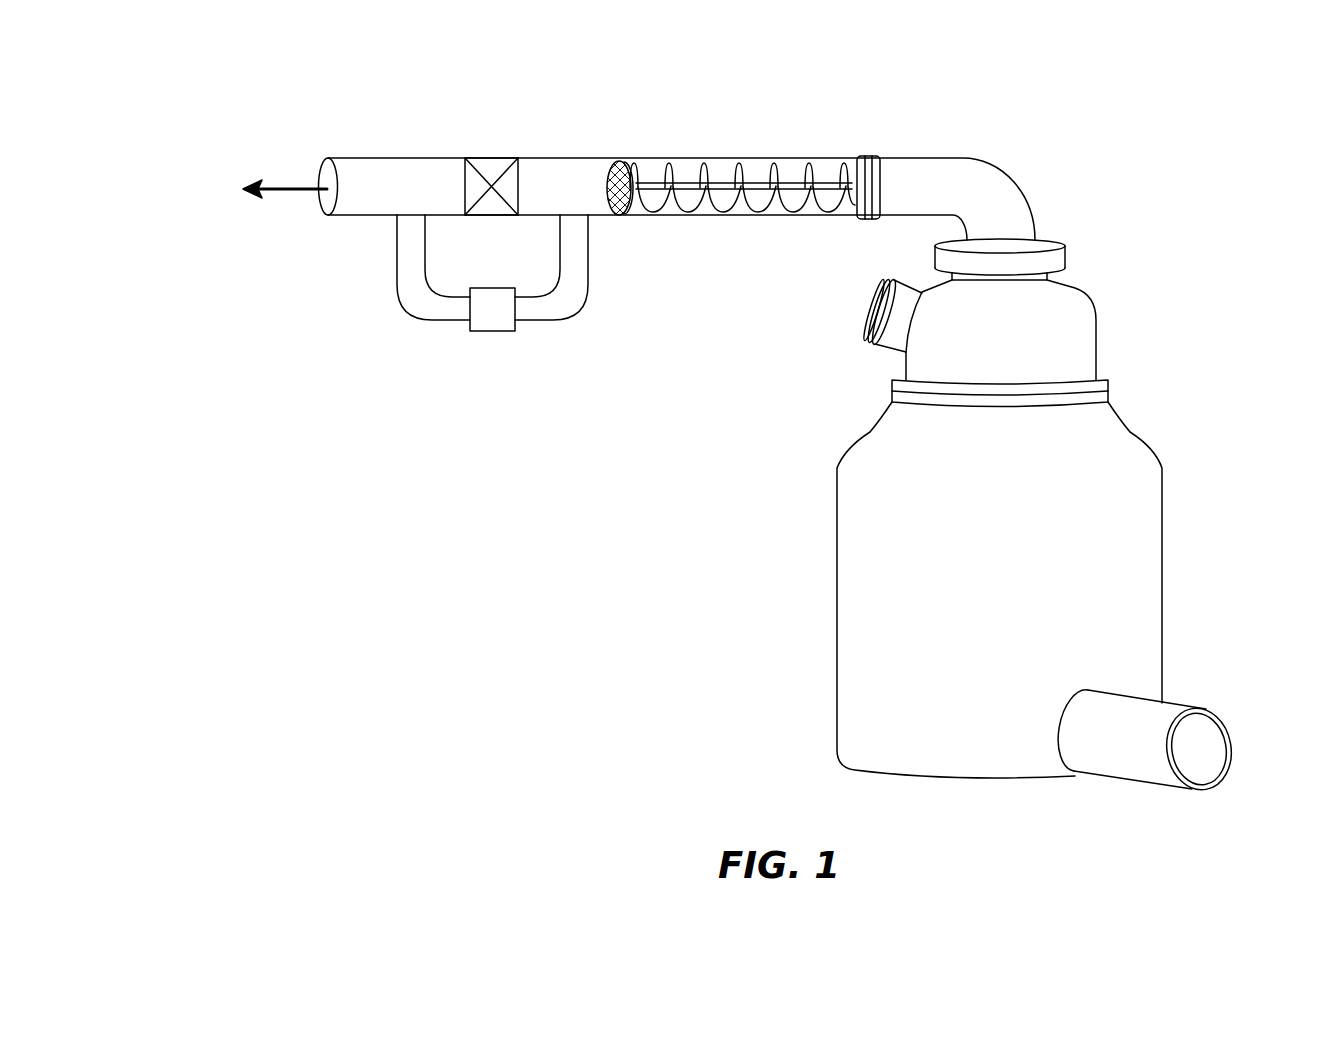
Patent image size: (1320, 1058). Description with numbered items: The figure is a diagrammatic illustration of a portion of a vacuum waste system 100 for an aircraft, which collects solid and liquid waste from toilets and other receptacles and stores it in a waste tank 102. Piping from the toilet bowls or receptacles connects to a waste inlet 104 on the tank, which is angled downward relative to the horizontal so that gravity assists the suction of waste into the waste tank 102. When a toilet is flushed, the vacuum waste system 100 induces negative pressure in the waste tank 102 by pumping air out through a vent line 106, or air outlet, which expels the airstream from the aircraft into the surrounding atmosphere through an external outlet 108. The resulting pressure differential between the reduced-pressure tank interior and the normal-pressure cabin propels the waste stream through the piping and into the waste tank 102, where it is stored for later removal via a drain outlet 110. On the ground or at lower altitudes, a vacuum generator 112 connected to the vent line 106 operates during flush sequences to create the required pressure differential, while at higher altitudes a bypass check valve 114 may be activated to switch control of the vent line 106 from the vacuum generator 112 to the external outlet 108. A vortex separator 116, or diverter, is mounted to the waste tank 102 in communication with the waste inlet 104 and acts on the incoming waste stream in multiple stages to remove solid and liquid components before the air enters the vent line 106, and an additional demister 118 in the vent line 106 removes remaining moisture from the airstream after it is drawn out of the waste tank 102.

The vacuum waste system 100 is at (207, 133).
The waste tank 102 is at (855, 578).
The waste inlet 104 is at (870, 310).
The vent line 106 is at (973, 173).
The external outlet 108 is at (322, 199).
The drain outlet 110 is at (1172, 720).
The vacuum generator 112 is at (486, 317).
The bypass check valve 114 is at (490, 168).
The vortex separator 116 is at (1083, 338).
The demister 118 is at (744, 224).